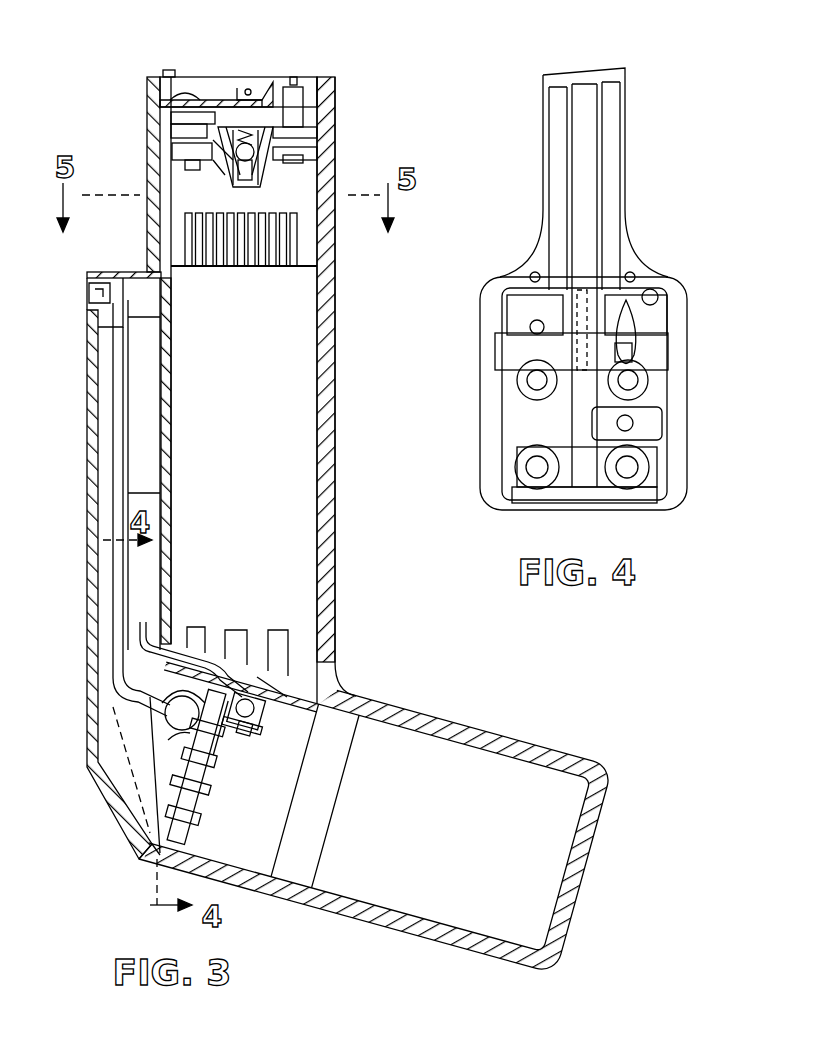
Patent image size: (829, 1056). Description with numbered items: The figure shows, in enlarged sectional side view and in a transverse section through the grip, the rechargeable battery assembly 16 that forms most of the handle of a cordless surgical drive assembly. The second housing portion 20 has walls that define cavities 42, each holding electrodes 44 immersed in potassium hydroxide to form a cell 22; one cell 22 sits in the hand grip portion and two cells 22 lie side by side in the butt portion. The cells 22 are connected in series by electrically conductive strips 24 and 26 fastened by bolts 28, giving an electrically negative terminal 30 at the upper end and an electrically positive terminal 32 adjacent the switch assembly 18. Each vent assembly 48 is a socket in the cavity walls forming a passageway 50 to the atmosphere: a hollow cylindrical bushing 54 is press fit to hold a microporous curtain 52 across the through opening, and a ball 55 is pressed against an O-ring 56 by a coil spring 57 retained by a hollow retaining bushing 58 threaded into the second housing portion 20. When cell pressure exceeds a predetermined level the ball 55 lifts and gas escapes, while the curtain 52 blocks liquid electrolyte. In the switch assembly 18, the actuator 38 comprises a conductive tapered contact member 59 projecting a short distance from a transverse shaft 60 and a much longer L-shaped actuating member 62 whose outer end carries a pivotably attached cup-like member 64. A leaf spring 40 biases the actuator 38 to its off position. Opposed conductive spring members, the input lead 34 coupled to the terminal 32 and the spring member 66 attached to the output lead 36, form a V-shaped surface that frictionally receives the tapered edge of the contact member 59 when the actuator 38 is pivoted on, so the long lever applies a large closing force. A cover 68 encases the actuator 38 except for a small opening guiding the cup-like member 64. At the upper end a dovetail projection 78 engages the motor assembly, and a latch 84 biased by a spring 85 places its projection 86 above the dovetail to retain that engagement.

In FIG. 3, the rechargeable battery assembly 16 is at (343, 402).
In FIG. 4, the rechargeable battery assembly 16 is at (640, 214).
In FIG. 3, the switch assembly 18 is at (100, 691).
In FIG. 4, the switch assembly 18 is at (676, 333).
In FIG. 3, the second housing portion 20 is at (331, 600).
In FIG. 4, the second housing portion 20 is at (484, 482).
In FIG. 3, the cell 22 is at (308, 242).
In FIG. 4, the cell 22 is at (515, 425).
In FIG. 3, the electrically conductive strip 24 is at (161, 442).
In FIG. 4, the electrically conductive strip 24 is at (552, 108).
In FIG. 3, the electrically conductive strip 26 is at (216, 812).
In FIG. 4, the electrically conductive strip 26 is at (580, 476).
In FIG. 3, the bolt 28 is at (171, 117).
In FIG. 4, the bolt 28 is at (516, 380).
In FIG. 3, the electrically negative terminal 30 is at (318, 128).
In FIG. 4, the electrically positive terminal 32 is at (640, 390).
In FIG. 4, the input lead 34 is at (651, 320).
In FIG. 4, the output lead 36 is at (619, 110).
In FIG. 3, the actuator 38 is at (158, 716).
In FIG. 4, the actuator 38 is at (668, 357).
In FIG. 3, the leaf spring 40 is at (152, 650).
In FIG. 4, the leaf spring 40 is at (556, 242).
In FIG. 3, the cavity 42 is at (182, 206).
In FIG. 3, the electrodes 44 is at (258, 265).
In FIG. 3, the vent assembly 48 is at (280, 178).
In FIG. 4, the vent assembly 48 is at (520, 292).
In FIG. 3, the passageway 50 is at (252, 180).
In FIG. 3, the curtain 52 is at (304, 160).
In FIG. 3, the hollow cylindrical bushing 54 is at (226, 172).
In FIG. 3, the ball 55 is at (250, 130).
In FIG. 3, the O-ring 56 is at (222, 165).
In FIG. 3, the coil spring 57 is at (246, 140).
In FIG. 3, the hollow retaining bushing 58 is at (260, 140).
In FIG. 4, the hollow retaining bushing 58 is at (512, 312).
In FIG. 3, the contact member 59 is at (173, 676).
In FIG. 4, the contact member 59 is at (646, 320).
In FIG. 3, the shaft 60 is at (176, 722).
In FIG. 4, the shaft 60 is at (503, 348).
In FIG. 3, the L-shaped actuating member 62 is at (115, 470).
In FIG. 4, the L-shaped actuating member 62 is at (586, 165).
In FIG. 3, the cup-like member 64 is at (90, 294).
In FIG. 4, the spring member 66 is at (619, 290).
In FIG. 3, the cover 68 is at (92, 531).
In FIG. 3, the dovetail projection 78 is at (336, 90).
In FIG. 3, the latch 84 is at (222, 77).
In FIG. 3, the spring 85 is at (208, 100).
In FIG. 3, the projection 86 is at (165, 72).